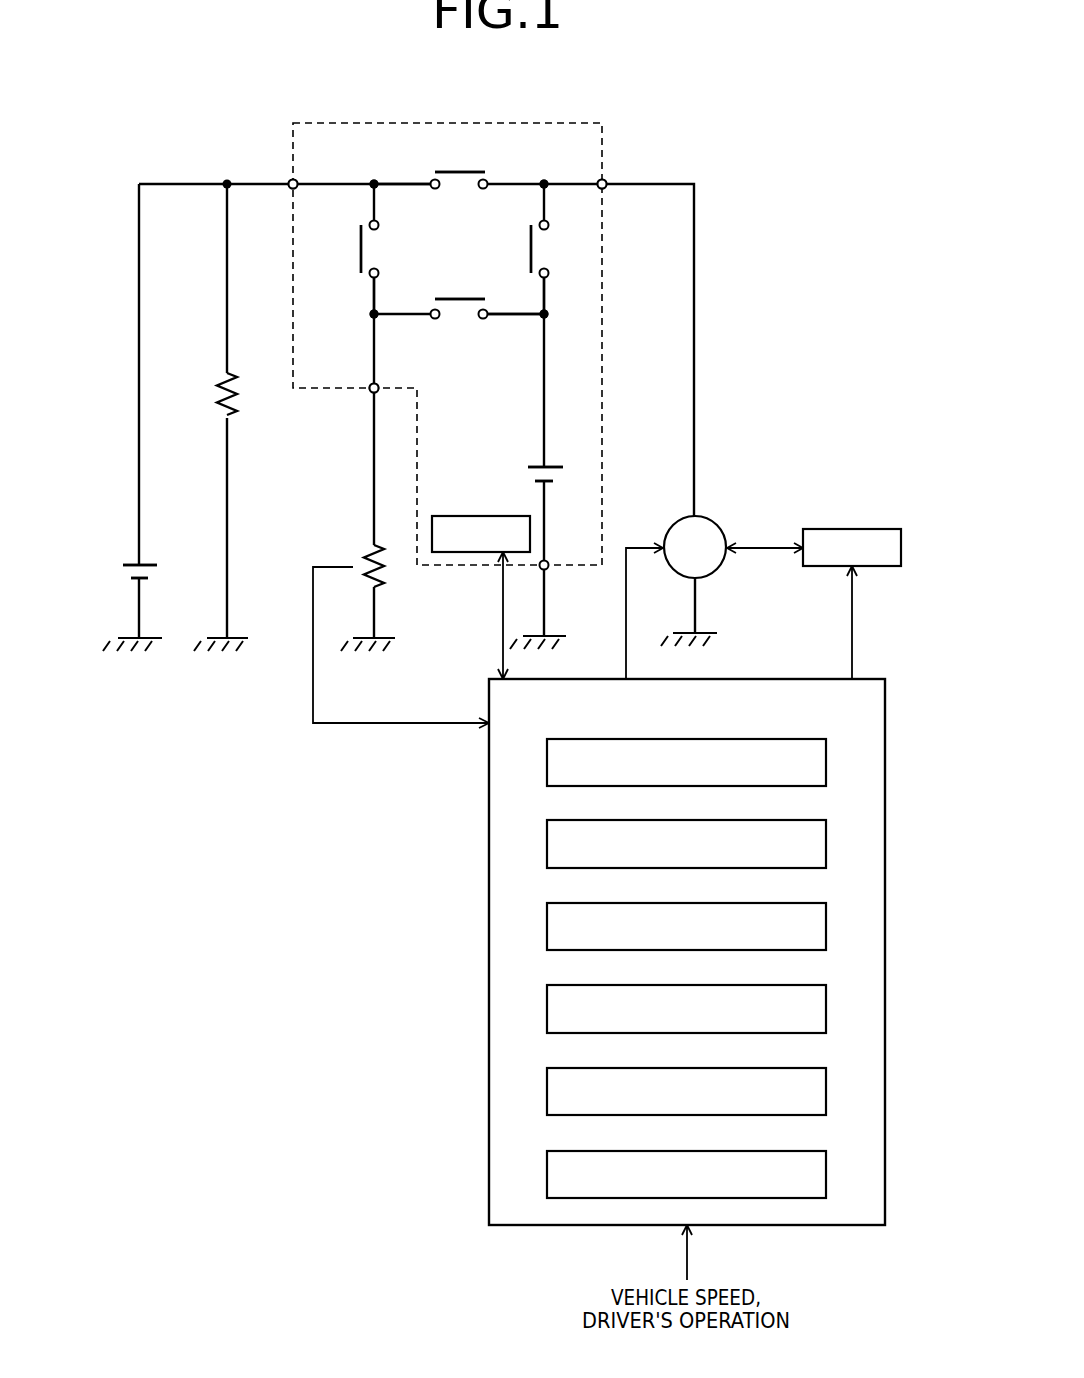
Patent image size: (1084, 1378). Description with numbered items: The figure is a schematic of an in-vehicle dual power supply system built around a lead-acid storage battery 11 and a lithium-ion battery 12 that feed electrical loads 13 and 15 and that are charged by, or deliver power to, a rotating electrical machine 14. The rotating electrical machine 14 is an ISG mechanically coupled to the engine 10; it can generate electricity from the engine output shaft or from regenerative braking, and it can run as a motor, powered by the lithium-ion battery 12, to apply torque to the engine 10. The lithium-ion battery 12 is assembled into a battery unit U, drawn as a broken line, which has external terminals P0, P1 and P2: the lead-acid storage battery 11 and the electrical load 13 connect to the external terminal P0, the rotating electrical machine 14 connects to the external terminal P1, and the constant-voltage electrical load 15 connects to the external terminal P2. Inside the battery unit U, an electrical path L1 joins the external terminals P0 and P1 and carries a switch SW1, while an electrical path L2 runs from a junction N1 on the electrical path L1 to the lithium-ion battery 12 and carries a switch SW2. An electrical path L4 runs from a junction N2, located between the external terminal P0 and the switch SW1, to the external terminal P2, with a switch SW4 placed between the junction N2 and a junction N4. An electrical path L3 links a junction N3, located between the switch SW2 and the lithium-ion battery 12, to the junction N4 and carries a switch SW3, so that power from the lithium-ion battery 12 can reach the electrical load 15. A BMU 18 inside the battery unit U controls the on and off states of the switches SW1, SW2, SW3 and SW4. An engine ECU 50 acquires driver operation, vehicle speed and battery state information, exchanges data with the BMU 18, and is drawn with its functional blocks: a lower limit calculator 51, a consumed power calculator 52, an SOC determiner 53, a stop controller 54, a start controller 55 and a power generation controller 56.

The engine 10 is at (872, 529).
The lead-acid storage battery 11 is at (139, 562).
The lithium-ion battery 12 is at (544, 462).
The electrical load 13 is at (227, 375).
The rotating electrical machine 14 is at (722, 525).
The electrical load 15 is at (374, 546).
The BMU 18 is at (458, 516).
The engine ECU 50 is at (489, 798).
The lower limit calculator 51 is at (738, 737).
The consumed power calculator 52 is at (738, 819).
The SOC determiner 53 is at (738, 902).
The stop controller 54 is at (738, 984).
The start controller 55 is at (738, 1066).
The power generation controller 56 is at (738, 1149).
The battery unit U is at (562, 123).
The external terminal P0 is at (291, 182).
The external terminal P1 is at (606, 179).
The external terminal P2 is at (371, 394).
The junction N1 is at (544, 180).
The junction N2 is at (374, 180).
The junction N3 is at (548, 318).
The junction N4 is at (376, 320).
The electrical path L1 is at (401, 182).
The electrical path L2 is at (548, 288).
The electrical path L3 is at (508, 316).
The electrical path L4 is at (372, 293).
The switch SW1 is at (461, 172).
The switch SW2 is at (531, 238).
The switch SW3 is at (452, 299).
The switch SW4 is at (361, 250).